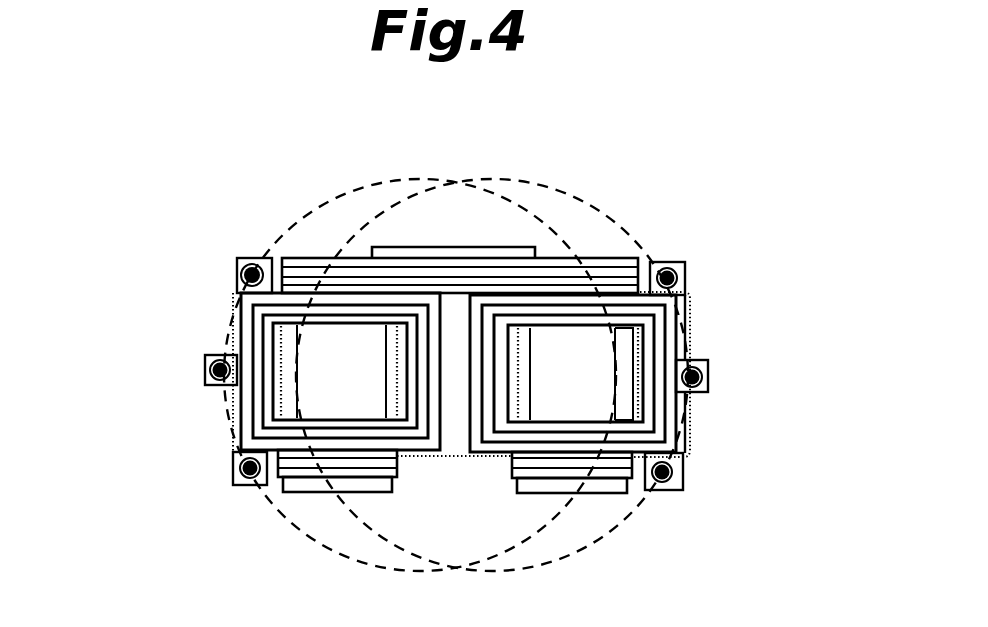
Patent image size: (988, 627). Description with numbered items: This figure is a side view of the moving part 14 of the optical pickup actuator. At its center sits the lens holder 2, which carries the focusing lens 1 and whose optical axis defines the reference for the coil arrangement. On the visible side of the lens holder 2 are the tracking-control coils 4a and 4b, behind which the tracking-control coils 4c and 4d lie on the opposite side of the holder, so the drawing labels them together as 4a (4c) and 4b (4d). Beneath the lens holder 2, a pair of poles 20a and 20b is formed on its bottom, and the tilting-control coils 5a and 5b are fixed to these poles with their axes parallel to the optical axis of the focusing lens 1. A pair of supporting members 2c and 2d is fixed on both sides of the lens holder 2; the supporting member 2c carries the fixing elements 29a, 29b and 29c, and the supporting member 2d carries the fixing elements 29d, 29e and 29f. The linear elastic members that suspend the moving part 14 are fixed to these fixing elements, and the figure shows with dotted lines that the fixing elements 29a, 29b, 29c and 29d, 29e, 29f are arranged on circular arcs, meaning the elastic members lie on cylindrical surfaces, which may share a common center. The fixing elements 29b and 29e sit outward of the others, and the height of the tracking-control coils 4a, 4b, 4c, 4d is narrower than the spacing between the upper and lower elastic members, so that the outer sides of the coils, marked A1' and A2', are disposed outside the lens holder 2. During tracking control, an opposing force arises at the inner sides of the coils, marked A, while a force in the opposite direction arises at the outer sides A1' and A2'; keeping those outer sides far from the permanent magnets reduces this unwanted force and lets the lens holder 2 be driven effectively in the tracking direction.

The focusing lens 1 is at (536, 249).
The lens holder 2 is at (304, 262).
The supporting member 2c is at (235, 462).
The supporting member 2d is at (660, 483).
The tracking-control coil 4a is at (250, 328).
The tracking-control coil 4b is at (650, 343).
The tracking-control coil 4c is at (223, 351).
The tracking-control coil 4d is at (711, 347).
The tilting-control coil 5a is at (345, 468).
The tilting-control coil 5b is at (560, 468).
The moving part 14 is at (708, 442).
The pole 20a is at (370, 482).
The pole 20b is at (536, 488).
The fixing element 29a is at (240, 262).
The fixing element 29b is at (207, 358).
The fixing element 29c is at (245, 485).
The fixing element 29d is at (670, 272).
The fixing element 29e is at (697, 380).
The fixing element 29f is at (680, 487).
The inner sides of the tracking-control coils A is at (454, 472).
The outer side of the tracking-control coils A1' is at (204, 284).
The outer side of the tracking-control coils A2' is at (721, 289).